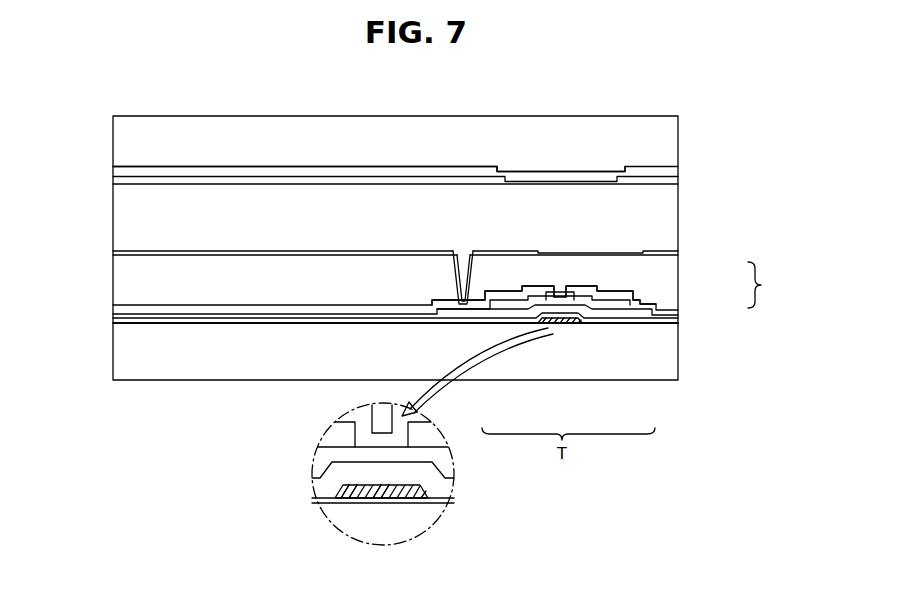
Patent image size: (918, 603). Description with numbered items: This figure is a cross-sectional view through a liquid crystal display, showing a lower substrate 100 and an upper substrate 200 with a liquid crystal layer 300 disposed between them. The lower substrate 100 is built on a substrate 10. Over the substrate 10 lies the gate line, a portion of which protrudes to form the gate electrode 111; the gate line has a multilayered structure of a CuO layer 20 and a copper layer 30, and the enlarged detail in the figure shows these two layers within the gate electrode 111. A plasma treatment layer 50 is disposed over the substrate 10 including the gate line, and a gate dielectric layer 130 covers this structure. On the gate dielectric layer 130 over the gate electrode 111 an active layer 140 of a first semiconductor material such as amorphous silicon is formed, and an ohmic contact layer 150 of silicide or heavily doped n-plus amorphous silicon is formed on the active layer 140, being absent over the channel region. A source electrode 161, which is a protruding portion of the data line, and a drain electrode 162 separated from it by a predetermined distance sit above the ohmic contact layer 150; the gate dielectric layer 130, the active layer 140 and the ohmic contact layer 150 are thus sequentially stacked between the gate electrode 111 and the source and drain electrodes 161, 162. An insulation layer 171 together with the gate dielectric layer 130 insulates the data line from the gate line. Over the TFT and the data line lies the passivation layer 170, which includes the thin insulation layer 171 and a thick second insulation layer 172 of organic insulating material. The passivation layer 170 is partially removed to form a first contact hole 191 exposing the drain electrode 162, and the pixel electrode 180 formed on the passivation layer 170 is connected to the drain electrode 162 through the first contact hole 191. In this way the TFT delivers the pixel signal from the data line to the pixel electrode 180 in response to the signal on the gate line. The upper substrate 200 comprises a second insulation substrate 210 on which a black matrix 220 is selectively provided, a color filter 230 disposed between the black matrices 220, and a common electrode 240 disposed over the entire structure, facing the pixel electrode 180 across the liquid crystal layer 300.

The upper substrate 200 is at (126, 102).
The lower substrate 100 is at (127, 391).
The substrate 10 is at (680, 358).
The plasma treatment layer 50 is at (680, 322).
The gate dielectric layer 130 is at (680, 318).
The gate electrode 111 is at (557, 324).
The CuO layer 20 is at (344, 498).
The copper layer 30 is at (376, 494).
The active layer 140 is at (508, 316).
The ohmic contact layer 150 is at (602, 302).
The source electrode 161 is at (636, 317).
The drain electrode 162 is at (484, 312).
The passivation layer 170 is at (771, 285).
The insulation layer 171 is at (680, 305).
The second insulation layer 172 is at (680, 272).
The pixel electrode 180 is at (113, 251).
The first contact hole 191 is at (462, 251).
The liquid crystal layer 300 is at (680, 218).
The common electrode 240 is at (680, 182).
The color filter 230 is at (680, 168).
The black matrix 220 is at (560, 170).
The second insulation substrate 210 is at (680, 143).